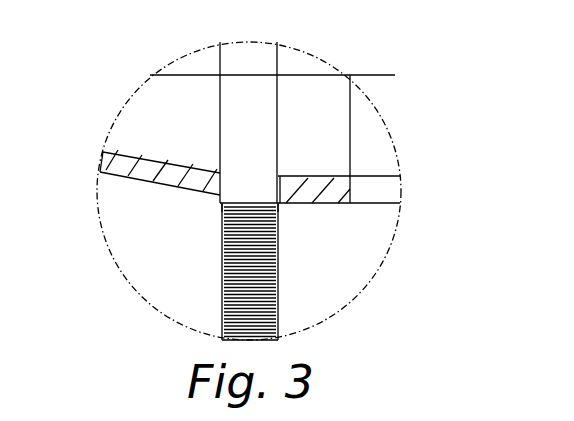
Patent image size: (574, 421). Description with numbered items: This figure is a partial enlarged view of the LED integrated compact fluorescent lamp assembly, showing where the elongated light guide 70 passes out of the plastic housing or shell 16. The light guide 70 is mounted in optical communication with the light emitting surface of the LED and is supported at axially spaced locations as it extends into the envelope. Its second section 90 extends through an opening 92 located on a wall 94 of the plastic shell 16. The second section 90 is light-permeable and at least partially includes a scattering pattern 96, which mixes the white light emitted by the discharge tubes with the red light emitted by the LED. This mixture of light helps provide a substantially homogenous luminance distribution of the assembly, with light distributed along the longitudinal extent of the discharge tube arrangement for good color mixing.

The light guide 70 is at (242, 128).
The shell 16 is at (170, 177).
The wall 94 is at (374, 203).
The opening 92 is at (222, 203).
The scattering pattern 96 is at (222, 250).
The second section 90 is at (302, 237).